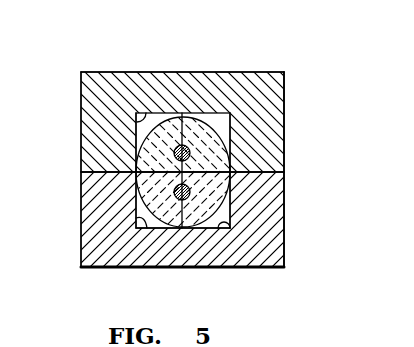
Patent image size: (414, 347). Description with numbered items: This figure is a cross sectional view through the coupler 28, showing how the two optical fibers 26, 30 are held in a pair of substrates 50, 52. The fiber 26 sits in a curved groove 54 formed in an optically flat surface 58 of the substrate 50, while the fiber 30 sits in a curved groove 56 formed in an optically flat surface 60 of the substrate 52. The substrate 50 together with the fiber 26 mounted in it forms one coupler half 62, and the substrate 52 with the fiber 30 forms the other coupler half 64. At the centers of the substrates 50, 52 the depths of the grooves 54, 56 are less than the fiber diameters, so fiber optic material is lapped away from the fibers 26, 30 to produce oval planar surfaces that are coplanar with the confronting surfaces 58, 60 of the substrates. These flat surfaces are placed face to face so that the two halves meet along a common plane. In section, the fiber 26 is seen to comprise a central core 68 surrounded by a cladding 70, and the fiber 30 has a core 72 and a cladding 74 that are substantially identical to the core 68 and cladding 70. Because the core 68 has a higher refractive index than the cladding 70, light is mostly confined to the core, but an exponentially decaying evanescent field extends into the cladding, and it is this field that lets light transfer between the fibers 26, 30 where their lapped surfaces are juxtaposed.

The optical fiber 26 is at (228, 107).
The coupler 28 is at (340, 173).
The optical fiber 30 is at (133, 208).
The substrate 50 is at (118, 72).
The substrate 52 is at (274, 273).
The curved groove 54 is at (136, 121).
The curved groove 56 is at (224, 222).
The optically flat surface 58 is at (263, 176).
The optically flat surface 60 is at (263, 170).
The coupler half 62 is at (333, 80).
The coupler half 64 is at (318, 242).
The central core 68 is at (184, 113).
The cladding 70 is at (153, 121).
The core 72 is at (181, 232).
The cladding 74 is at (148, 228).